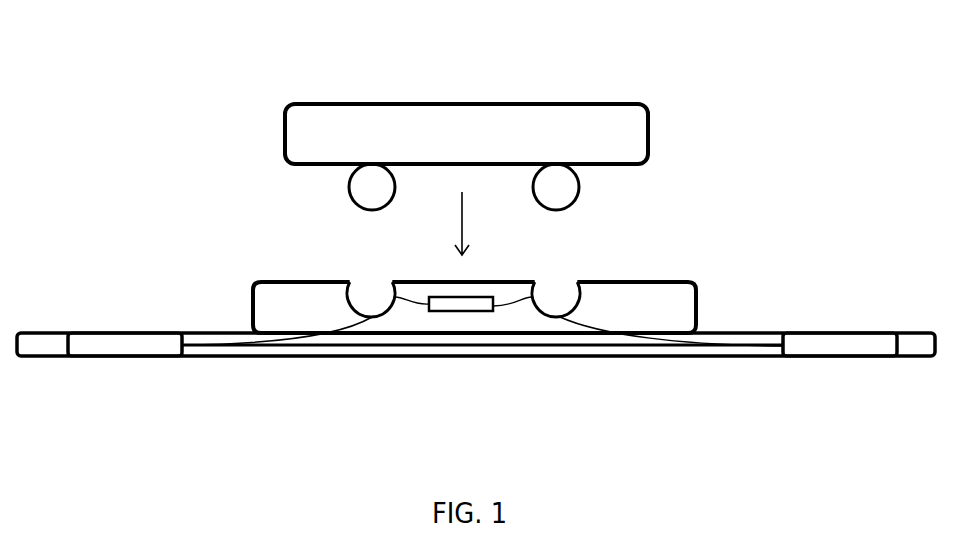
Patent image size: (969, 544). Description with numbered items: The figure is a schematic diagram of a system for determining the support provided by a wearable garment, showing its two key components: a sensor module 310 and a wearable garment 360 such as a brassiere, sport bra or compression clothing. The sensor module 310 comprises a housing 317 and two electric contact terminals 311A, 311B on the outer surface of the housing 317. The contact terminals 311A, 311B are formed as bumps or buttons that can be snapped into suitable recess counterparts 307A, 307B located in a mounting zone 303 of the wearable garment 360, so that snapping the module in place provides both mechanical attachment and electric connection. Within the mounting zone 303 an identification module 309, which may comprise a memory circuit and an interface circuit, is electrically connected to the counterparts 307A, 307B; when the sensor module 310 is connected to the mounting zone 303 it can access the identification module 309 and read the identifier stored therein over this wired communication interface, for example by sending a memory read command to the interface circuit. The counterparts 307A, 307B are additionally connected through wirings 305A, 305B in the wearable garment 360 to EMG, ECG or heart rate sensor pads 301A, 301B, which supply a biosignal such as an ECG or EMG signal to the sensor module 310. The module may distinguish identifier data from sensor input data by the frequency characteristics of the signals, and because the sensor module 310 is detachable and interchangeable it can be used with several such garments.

The housing 317 is at (467, 104).
The sensor module 310 is at (695, 135).
The electric contact terminal 311A is at (352, 200).
The electric contact terminal 311B is at (579, 190).
The mounting zone 303 is at (675, 282).
The recess counterpart 307A is at (372, 282).
The recess counterpart 307B is at (556, 282).
The identification module 309 is at (462, 311).
The wearable garment 360 is at (335, 378).
The sensor pad 301A is at (124, 357).
The sensor pad 301B is at (838, 357).
The wiring 305A is at (213, 342).
The wiring 305B is at (747, 345).